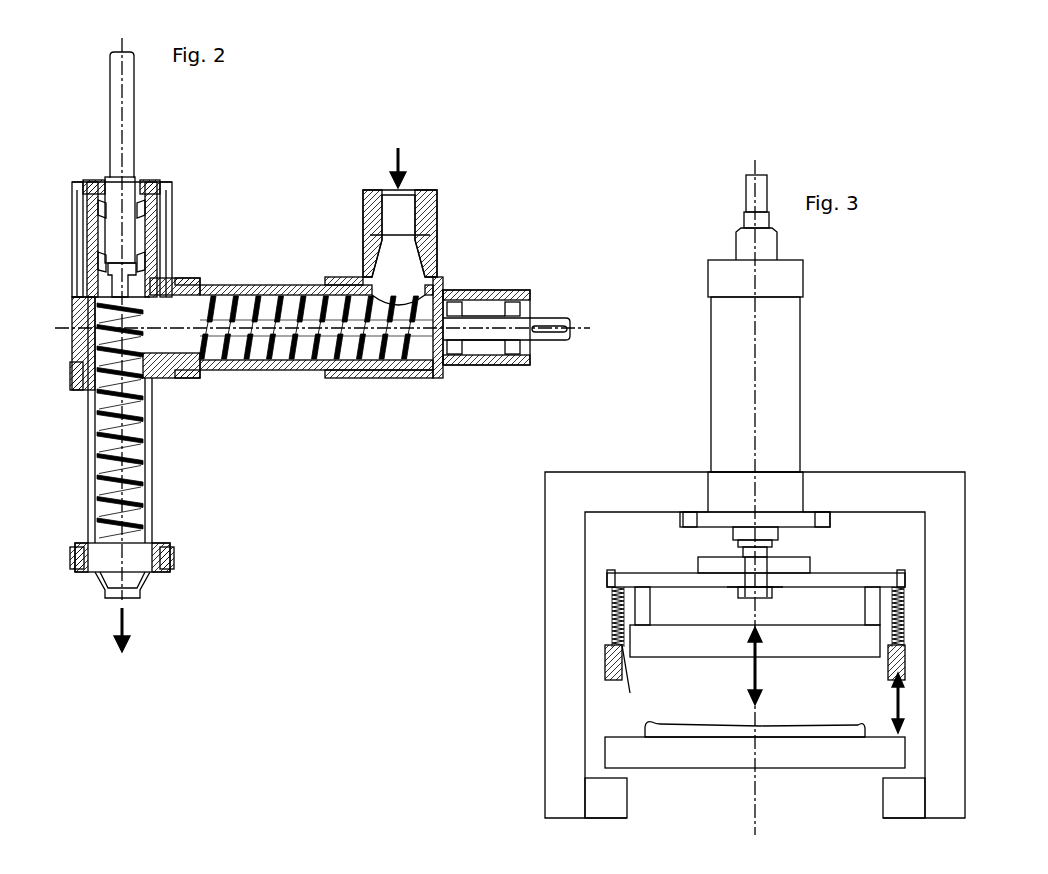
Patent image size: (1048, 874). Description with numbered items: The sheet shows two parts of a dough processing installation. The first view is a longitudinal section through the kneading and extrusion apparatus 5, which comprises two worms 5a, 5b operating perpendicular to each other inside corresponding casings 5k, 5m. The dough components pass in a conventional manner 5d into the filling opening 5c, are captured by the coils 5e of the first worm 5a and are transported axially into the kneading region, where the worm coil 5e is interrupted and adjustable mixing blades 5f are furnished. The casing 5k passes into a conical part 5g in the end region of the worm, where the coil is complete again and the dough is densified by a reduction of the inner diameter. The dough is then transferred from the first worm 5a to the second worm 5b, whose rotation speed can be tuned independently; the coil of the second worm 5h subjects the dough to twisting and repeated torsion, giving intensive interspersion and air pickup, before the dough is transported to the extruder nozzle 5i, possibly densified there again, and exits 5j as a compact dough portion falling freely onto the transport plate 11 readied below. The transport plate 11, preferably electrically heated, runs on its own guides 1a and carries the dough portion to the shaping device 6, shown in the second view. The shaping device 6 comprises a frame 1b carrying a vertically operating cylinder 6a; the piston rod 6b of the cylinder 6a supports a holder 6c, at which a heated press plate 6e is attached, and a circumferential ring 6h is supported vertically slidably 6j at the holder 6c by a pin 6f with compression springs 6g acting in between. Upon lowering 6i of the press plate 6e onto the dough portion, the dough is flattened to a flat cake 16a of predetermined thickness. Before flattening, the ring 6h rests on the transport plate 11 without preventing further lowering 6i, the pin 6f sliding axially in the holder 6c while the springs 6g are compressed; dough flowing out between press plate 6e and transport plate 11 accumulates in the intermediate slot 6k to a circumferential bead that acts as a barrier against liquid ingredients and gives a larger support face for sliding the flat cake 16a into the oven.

In FIG. 2, the kneading and extrusion apparatus 5 is at (203, 265).
In FIG. 2, the first worm 5a is at (485, 320).
In FIG. 2, the second worm 5b is at (128, 237).
In FIG. 2, the filling opening 5c is at (368, 218).
In FIG. 2, the passage of dough components 5d is at (404, 170).
In FIG. 2, the worm coil 5e is at (375, 350).
In FIG. 2, the adjustable mixing blades 5f is at (243, 357).
In FIG. 2, the conical part 5g is at (182, 372).
In FIG. 2, the coil of the second worm 5h is at (138, 505).
In FIG. 2, the extruder nozzle 5i is at (140, 583).
In FIG. 2, the exit of dough portion 5j is at (130, 627).
In FIG. 2, the casing of first worm 5k is at (307, 285).
In FIG. 2, the casing of second worm 5m is at (148, 527).
In FIG. 3, the shaping device 6 is at (825, 453).
In FIG. 3, the vertically operating cylinder 6a is at (777, 351).
In FIG. 3, the piston rod 6b is at (737, 560).
In FIG. 3, the holder 6c is at (653, 557).
In FIG. 3, the heated press plate 6e is at (660, 635).
In FIG. 3, the pin 6f is at (905, 572).
In FIG. 3, the compression springs 6g is at (908, 607).
In FIG. 3, the circumferential ring 6h is at (907, 663).
In FIG. 3, the lowering of press plate 6i is at (757, 700).
In FIG. 3, the vertical sliding of ring 6j is at (903, 703).
In FIG. 3, the intermediate slot 6k is at (630, 693).
In FIG. 3, the guides 1a is at (615, 800).
In FIG. 3, the frame of shaping device 1b is at (570, 660).
In FIG. 3, the transport plate 11 is at (633, 753).
In FIG. 3, the flat cake 16a is at (705, 731).